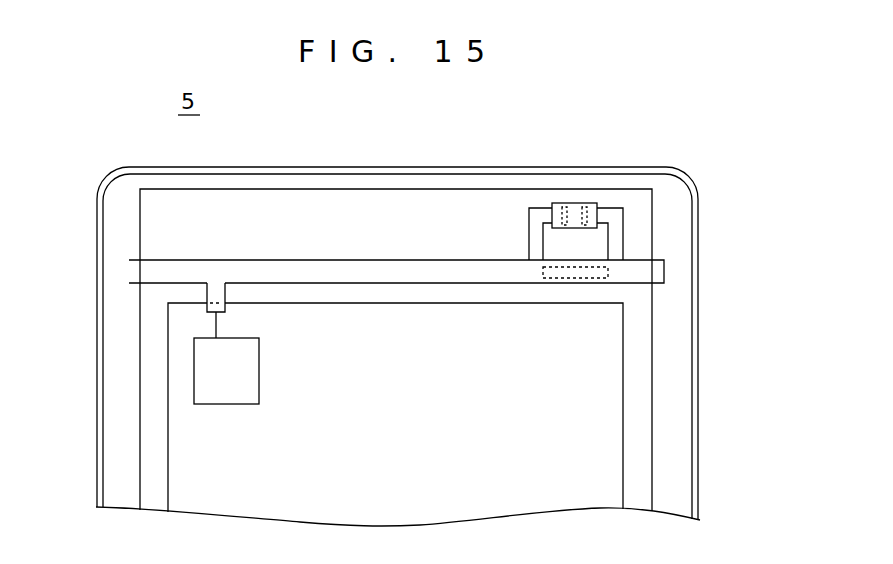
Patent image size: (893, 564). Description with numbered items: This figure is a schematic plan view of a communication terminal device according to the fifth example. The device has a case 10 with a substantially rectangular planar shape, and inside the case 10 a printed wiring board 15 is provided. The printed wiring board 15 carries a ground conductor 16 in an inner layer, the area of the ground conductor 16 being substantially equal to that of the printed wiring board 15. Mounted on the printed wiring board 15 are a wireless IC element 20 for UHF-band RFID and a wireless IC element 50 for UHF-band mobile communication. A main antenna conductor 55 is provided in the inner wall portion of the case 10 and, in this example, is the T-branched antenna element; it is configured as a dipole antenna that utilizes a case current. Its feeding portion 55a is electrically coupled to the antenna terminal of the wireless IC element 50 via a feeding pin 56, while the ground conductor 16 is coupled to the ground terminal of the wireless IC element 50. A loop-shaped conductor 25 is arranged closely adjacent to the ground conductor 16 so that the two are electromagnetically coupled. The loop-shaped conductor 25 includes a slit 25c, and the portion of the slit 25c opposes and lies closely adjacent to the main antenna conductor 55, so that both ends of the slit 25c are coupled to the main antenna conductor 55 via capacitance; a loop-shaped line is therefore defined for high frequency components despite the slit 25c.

The case 10 is at (697, 353).
The printed wiring board 15 is at (648, 417).
The ground conductor 16 is at (608, 467).
The wireless IC element for UHF-band RFID 20 is at (572, 202).
The loop-shaped conductor 25 is at (533, 227).
The slit 25c is at (575, 278).
The wireless IC element for UHF-band mobile communication 50 is at (233, 404).
The main antenna conductor 55 is at (441, 277).
The feeding portion 55a is at (225, 292).
The feeding pin 56 is at (214, 323).